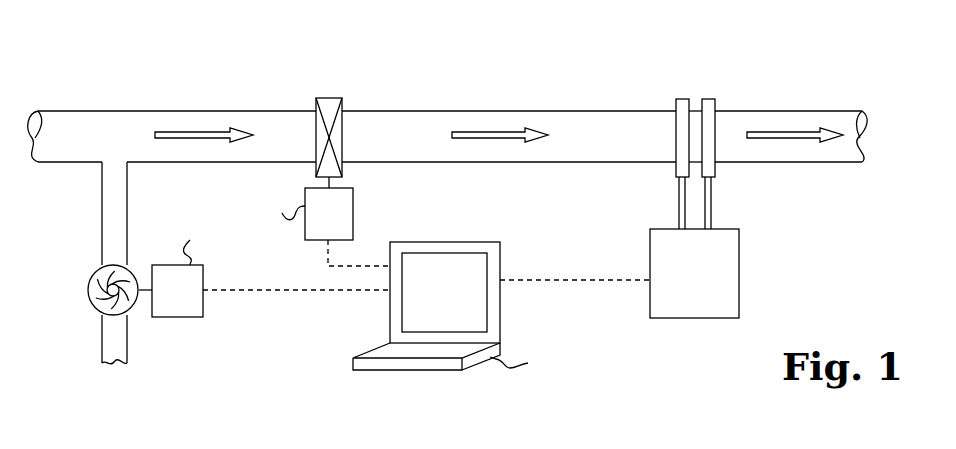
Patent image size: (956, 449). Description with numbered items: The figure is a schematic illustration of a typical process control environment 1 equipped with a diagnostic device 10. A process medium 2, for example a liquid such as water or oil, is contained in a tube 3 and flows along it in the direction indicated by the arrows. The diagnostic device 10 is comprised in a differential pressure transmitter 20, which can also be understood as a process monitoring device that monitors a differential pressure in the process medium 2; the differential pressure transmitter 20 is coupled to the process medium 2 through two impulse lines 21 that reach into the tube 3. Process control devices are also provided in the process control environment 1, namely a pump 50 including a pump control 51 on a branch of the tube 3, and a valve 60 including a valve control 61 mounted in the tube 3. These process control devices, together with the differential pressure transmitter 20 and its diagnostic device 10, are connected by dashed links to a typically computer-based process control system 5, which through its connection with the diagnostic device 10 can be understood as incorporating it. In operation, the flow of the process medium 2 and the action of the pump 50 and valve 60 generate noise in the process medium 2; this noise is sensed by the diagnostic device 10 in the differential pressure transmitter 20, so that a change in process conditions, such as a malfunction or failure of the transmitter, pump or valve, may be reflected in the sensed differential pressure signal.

The process control environment 1 is at (56, 51).
The process medium 2 is at (398, 130).
The tube 3 is at (494, 111).
The process control system 5 is at (384, 370).
The diagnostic device 10 is at (755, 273).
The differential pressure transmitter 20 is at (739, 278).
The impulse lines 21 is at (685, 192).
The pump 50 is at (88, 290).
The pump control 51 is at (185, 318).
The valve 60 is at (325, 97).
The valve control 61 is at (353, 207).